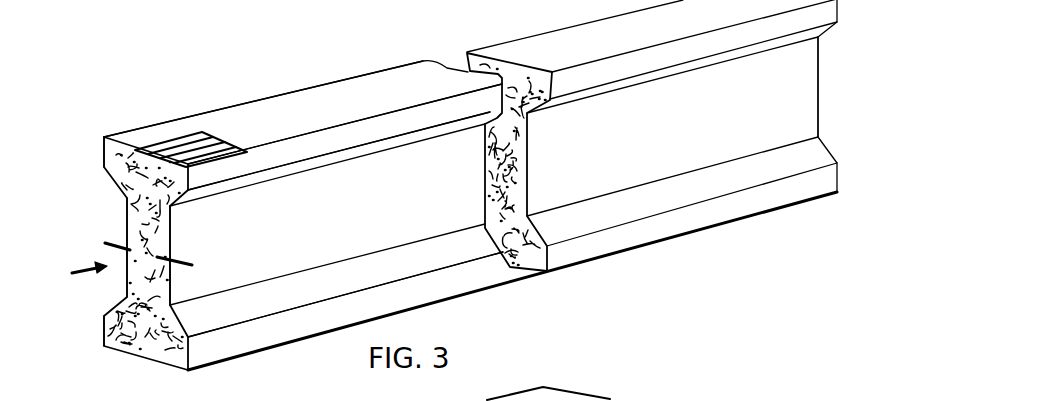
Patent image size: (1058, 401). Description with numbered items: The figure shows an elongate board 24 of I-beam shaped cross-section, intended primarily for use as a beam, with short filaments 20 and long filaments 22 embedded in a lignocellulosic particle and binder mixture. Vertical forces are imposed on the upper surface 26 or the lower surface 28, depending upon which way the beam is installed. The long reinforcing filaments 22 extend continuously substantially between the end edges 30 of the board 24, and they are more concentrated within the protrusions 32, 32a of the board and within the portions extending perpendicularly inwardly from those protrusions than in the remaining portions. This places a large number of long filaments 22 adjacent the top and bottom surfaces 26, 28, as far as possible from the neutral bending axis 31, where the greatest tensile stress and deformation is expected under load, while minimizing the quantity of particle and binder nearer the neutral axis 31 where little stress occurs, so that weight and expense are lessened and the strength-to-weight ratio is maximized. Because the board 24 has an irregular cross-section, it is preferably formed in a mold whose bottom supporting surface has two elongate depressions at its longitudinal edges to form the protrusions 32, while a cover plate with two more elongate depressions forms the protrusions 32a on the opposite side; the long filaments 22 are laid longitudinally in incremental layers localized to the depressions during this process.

The short filaments 20 is at (137, 217).
The long filaments 22 is at (127, 143).
The elongate board 24 is at (75, 271).
The upper surface 26 is at (355, 77).
The lower surface 28 is at (521, 271).
The end edges 30 is at (123, 300).
The neutral bending axis 31 is at (157, 257).
The protrusions 32 is at (295, 147).
The protrusions 32a is at (103, 152).